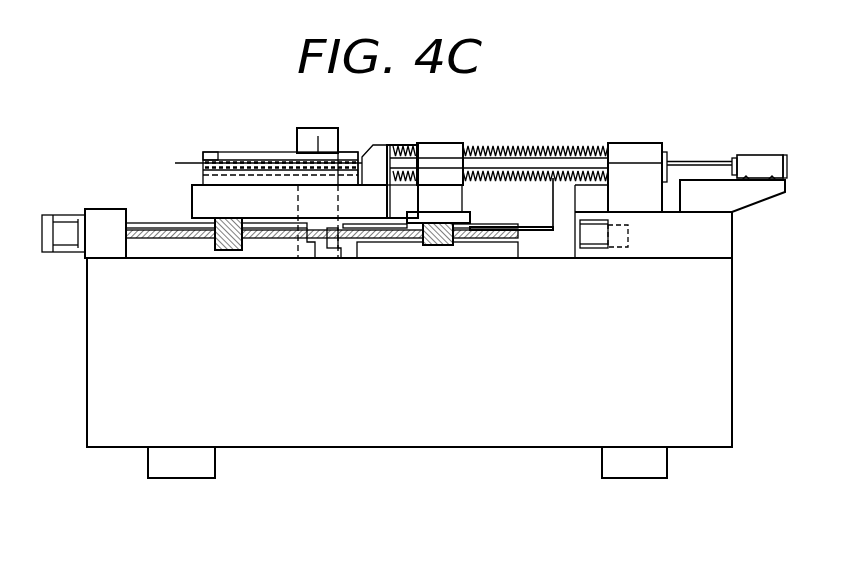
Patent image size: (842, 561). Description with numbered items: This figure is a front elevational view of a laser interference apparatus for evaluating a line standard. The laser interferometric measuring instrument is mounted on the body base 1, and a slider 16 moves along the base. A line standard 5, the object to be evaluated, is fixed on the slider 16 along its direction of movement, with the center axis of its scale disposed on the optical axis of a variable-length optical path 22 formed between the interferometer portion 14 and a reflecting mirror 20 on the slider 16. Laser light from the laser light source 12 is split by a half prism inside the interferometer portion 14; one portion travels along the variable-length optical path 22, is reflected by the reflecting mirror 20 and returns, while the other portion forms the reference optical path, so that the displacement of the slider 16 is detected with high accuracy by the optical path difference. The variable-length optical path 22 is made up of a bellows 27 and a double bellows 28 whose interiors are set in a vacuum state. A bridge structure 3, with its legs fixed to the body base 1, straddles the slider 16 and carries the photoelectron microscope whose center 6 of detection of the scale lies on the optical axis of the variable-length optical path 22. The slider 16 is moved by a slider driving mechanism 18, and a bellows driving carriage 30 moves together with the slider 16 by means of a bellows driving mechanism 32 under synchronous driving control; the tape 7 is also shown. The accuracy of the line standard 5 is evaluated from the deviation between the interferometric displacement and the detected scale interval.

The body base 1 is at (727, 320).
The bridge structure 3 is at (317, 140).
The line standard 5 is at (221, 152).
The center of detection 6 is at (297, 148).
The tape 7 is at (178, 163).
The laser light source 12 is at (760, 163).
The interferometer portion 14 is at (637, 150).
The slider 16 is at (193, 203).
The slider driving mechanism 18 is at (272, 238).
The reflecting mirror 20 is at (380, 150).
The variable-length optical path 22 is at (490, 178).
The bellows 27 is at (495, 152).
The double bellows 28 is at (402, 145).
The bellows driving carriage 30 is at (440, 143).
The bellows driving mechanism 32 is at (487, 238).